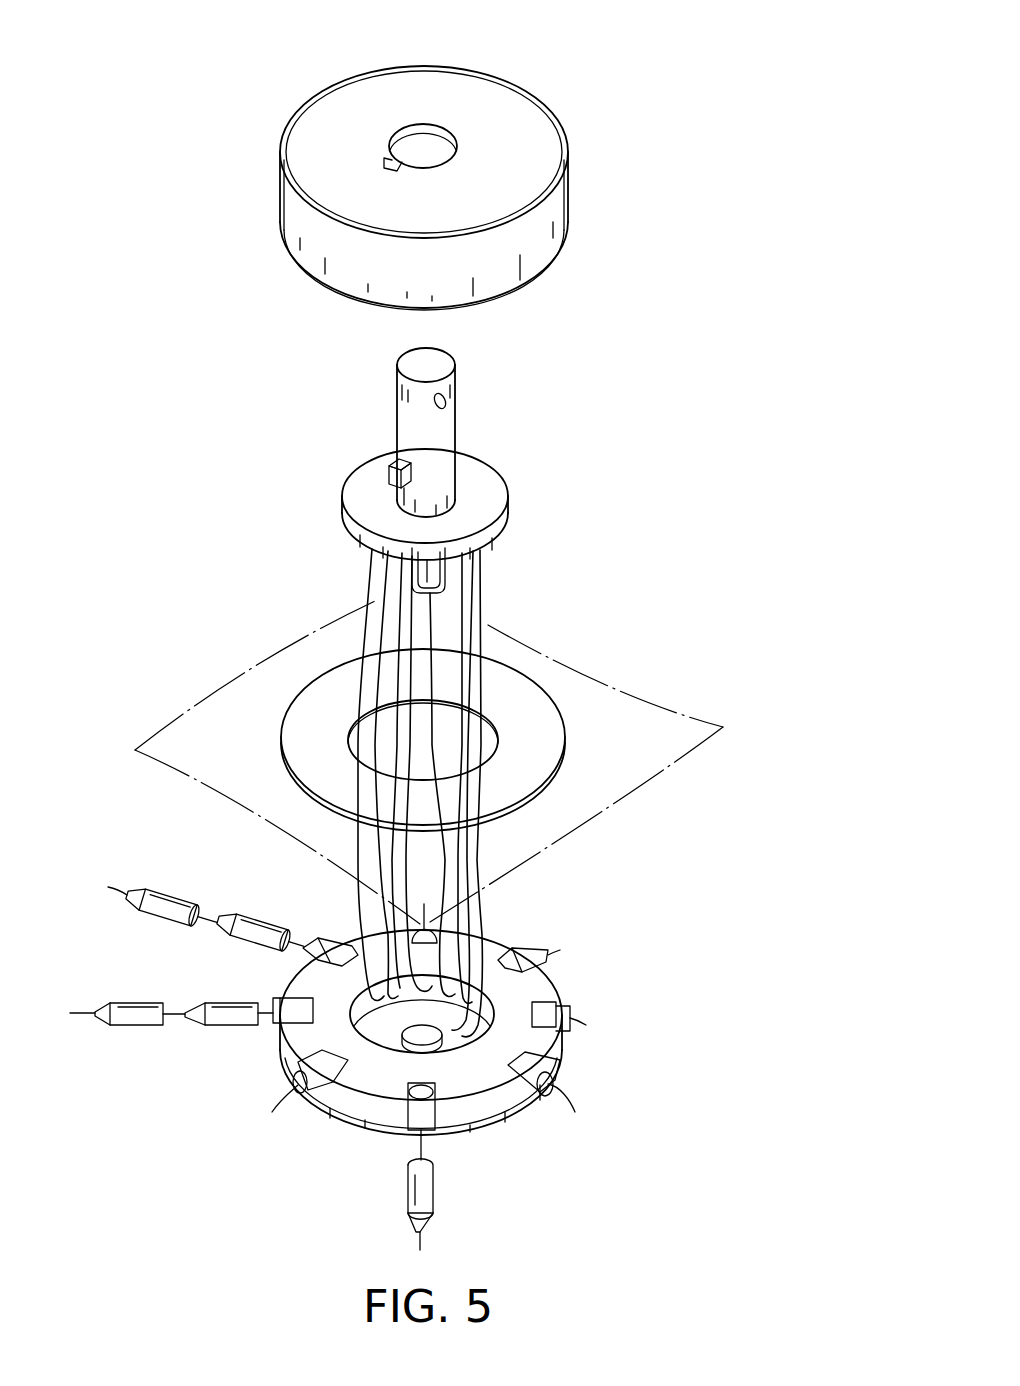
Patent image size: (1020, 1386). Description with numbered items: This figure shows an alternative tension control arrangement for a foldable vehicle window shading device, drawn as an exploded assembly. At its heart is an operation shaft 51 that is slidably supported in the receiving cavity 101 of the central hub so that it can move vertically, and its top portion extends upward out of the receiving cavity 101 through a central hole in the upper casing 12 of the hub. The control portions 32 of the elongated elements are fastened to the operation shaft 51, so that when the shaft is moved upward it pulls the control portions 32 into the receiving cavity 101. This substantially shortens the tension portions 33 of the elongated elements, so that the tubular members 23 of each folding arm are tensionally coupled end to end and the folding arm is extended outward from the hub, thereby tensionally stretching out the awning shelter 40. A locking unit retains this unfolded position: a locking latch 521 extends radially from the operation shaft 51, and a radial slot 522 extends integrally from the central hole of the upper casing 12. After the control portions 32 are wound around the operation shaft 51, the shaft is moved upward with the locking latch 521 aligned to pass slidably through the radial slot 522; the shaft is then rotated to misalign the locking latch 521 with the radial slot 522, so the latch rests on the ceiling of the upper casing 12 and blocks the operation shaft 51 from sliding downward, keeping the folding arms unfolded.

The radial slot 522 is at (385, 157).
The upper casing 12 is at (533, 243).
The locking latch 521 is at (388, 474).
The operation shaft 51 is at (438, 428).
The control portions 32 is at (486, 658).
The awning shelter 40 is at (697, 753).
The receiving cavity 101 is at (514, 916).
The tubular members 23 is at (227, 1018).
The tension portions 33 is at (575, 1106).